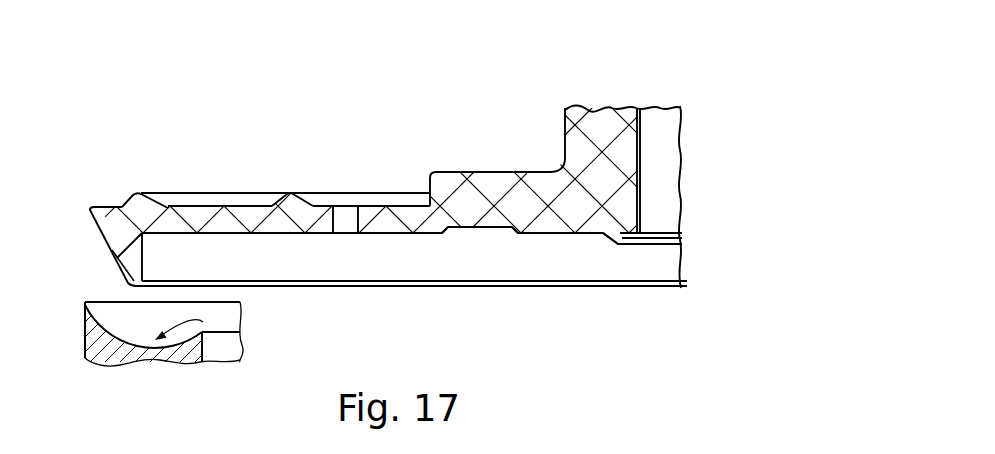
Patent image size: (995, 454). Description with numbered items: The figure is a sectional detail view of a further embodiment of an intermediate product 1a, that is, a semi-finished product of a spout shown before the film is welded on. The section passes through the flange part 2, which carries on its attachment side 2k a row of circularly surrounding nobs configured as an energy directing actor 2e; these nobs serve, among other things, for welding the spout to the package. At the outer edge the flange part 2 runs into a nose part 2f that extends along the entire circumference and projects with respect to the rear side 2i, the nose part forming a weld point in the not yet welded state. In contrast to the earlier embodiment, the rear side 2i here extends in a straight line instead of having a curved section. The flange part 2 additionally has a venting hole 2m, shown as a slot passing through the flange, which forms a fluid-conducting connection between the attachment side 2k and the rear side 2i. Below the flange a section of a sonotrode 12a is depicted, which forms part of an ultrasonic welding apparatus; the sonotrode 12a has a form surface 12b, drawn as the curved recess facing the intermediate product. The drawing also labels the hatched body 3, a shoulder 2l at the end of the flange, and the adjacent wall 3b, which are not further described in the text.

The intermediate product 1a is at (680, 78).
The flange part 2 is at (495, 182).
The energy directing actor 2e is at (140, 192).
The nose part 2f is at (132, 273).
The rear side 2i is at (534, 242).
The attachment side 2k is at (401, 200).
The shoulder 2l is at (620, 246).
The venting hole 2m is at (343, 207).
The cross member 3 is at (602, 122).
The wall 3b is at (668, 213).
The sonotrode 12a is at (118, 353).
The form surface 12b is at (228, 342).